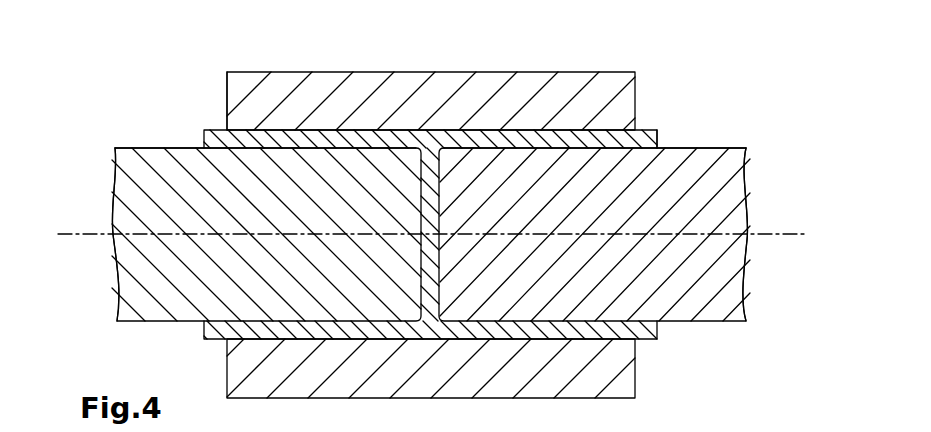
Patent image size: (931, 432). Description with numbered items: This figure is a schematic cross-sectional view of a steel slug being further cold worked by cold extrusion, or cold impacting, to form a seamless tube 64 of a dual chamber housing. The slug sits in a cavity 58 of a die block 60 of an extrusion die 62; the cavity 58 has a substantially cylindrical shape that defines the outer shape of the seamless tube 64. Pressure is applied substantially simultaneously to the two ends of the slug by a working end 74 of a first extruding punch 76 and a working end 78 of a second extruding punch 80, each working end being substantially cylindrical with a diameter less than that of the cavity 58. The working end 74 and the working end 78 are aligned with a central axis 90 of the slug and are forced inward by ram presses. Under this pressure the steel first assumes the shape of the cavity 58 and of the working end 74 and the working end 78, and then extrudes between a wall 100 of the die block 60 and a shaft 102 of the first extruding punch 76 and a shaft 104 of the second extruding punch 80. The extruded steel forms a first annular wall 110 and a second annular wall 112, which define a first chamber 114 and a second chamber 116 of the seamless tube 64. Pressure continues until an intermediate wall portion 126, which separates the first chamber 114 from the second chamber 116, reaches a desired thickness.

The cavity 58 is at (455, 201).
The die block 60 is at (417, 72).
The extrusion die 62 is at (415, 67).
The seamless tube 64 is at (648, 128).
The working end of first extruding punch 74 is at (428, 212).
The first extruding punch 76 is at (236, 227).
The working end of second extruding punch 78 is at (434, 278).
The second extruding punch 80 is at (626, 208).
The central axis 90 is at (781, 230).
The wall of die block 100 is at (227, 90).
The shaft of first extruding punch 102 is at (117, 303).
The shaft of second extruding punch 104 is at (747, 274).
The first annular wall 110 is at (430, 111).
The second annular wall 112 is at (658, 330).
The first chamber 114 is at (240, 148).
The second chamber 116 is at (608, 149).
The intermediate wall portion 126 is at (432, 181).